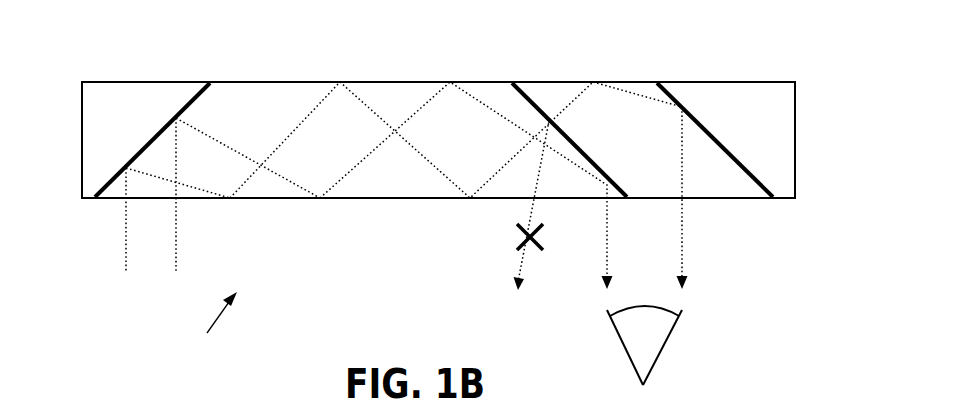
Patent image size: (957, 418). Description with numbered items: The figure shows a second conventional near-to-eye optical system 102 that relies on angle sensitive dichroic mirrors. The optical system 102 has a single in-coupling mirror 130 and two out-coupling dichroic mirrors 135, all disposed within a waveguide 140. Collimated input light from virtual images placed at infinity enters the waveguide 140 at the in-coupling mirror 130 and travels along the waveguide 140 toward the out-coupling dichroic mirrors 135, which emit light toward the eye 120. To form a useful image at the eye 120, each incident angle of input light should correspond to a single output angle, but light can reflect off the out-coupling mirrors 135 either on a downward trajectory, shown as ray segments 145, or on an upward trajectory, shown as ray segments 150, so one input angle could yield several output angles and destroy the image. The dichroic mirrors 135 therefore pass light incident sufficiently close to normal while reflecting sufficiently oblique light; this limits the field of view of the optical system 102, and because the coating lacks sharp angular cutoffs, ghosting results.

The near-to-eye optical system 102 is at (207, 323).
The eye 120 is at (662, 348).
The in-coupling mirror 130 is at (152, 139).
The out-coupling dichroic mirrors 135 is at (541, 104).
The waveguide 140 is at (262, 81).
The ray segments 145 is at (467, 93).
The ray segments 150 is at (510, 163).